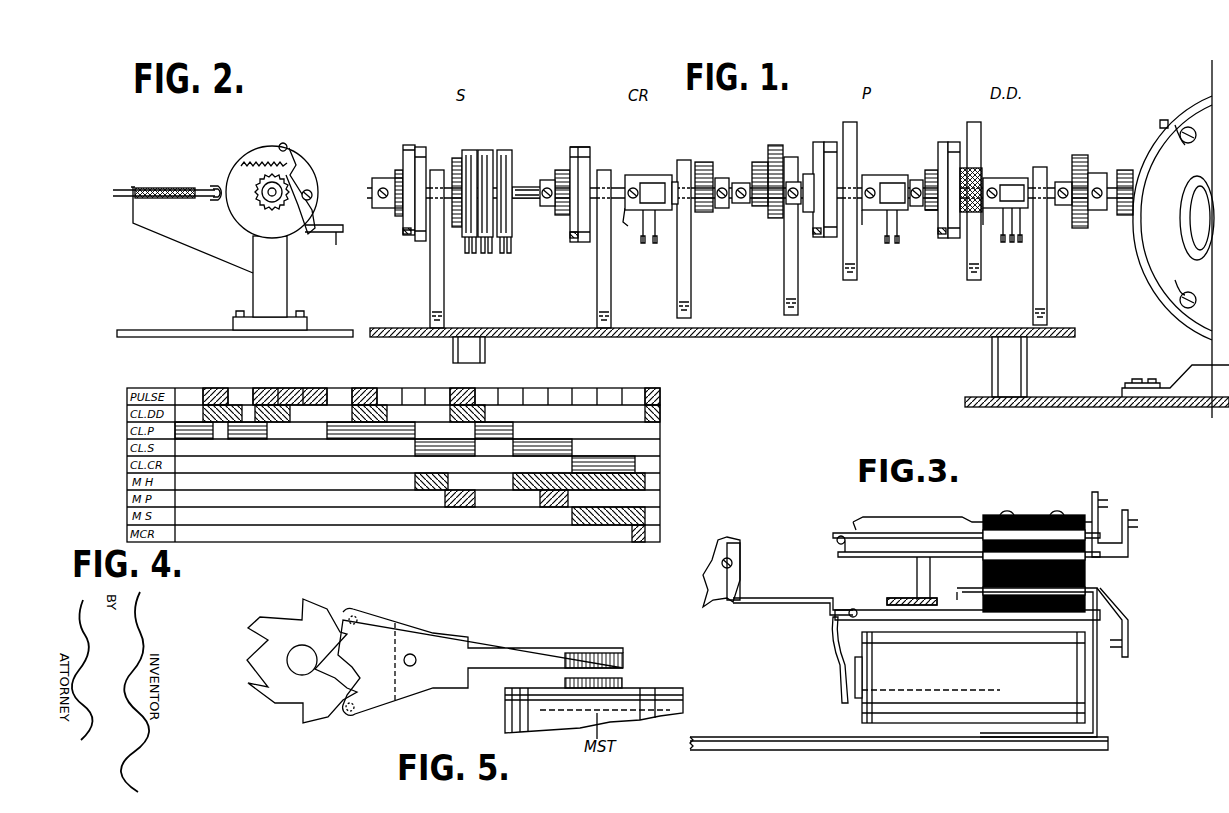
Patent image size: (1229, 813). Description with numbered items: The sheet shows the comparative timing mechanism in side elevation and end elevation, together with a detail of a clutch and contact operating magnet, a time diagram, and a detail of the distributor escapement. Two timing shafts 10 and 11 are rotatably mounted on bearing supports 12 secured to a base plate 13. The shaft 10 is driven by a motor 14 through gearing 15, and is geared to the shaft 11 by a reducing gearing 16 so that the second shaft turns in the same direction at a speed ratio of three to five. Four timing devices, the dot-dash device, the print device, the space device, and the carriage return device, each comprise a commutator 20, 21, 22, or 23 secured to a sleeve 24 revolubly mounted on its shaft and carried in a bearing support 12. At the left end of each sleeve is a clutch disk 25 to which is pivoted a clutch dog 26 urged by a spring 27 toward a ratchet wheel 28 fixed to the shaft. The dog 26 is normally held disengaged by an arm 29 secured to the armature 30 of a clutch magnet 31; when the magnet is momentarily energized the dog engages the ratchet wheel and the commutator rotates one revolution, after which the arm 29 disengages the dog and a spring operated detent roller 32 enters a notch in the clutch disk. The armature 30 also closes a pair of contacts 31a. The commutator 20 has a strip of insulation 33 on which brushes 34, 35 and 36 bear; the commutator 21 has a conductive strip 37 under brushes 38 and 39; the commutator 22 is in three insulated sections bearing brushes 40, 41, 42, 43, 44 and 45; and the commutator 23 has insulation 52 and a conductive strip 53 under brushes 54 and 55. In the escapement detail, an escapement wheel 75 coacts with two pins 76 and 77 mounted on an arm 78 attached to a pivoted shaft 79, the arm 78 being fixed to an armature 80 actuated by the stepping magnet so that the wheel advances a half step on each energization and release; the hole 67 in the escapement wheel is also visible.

In FIG. 1, the timing shaft 10 is at (985, 178).
In FIG. 1, the timing shaft 11 is at (524, 186).
In FIG. 1, the bearing support 12 is at (430, 290).
In FIG. 2, the bearing support 12 is at (287, 283).
In FIG. 1, the base plate 13 is at (757, 338).
In FIG. 2, the base plate 13 is at (278, 337).
In FIG. 1, the motor 14 is at (1143, 290).
In FIG. 1, the gearing 15 is at (1078, 228).
In FIG. 1, the reducing gearing 16 is at (770, 220).
In FIG. 1, the commutator 20 is at (1008, 178).
In FIG. 1, the commutator 21 is at (890, 175).
In FIG. 1, the commutator 22 is at (510, 134).
In FIG. 1, the commutator 23 is at (662, 183).
In FIG. 1, the sleeve 24 is at (455, 170).
In FIG. 1, the clutch disk 25 is at (421, 147).
In FIG. 2, the clutch disk 25 is at (292, 228).
In FIG. 3, the clutch disk 25 is at (718, 607).
In FIG. 1, the clutch dog 26 is at (572, 224).
In FIG. 2, the clutch dog 26 is at (300, 158).
In FIG. 3, the clutch dog 26 is at (740, 548).
In FIG. 2, the spring 27 is at (265, 150).
In FIG. 1, the ratchet wheel 28 is at (398, 175).
In FIG. 2, the ratchet wheel 28 is at (258, 207).
In FIG. 1, the arm 29 is at (405, 236).
In FIG. 2, the arm 29 is at (336, 245).
In FIG. 3, the arm 29 is at (783, 603).
In FIG. 3, the armature 30 is at (837, 645).
In FIG. 3, the clutch magnet 31 is at (862, 715).
In FIG. 3, the contacts 31a is at (843, 540).
In FIG. 2, the detent roller 32 is at (217, 184).
In FIG. 1, the strip of insulation 33 is at (1022, 185).
In FIG. 1, the brush 34 is at (1003, 243).
In FIG. 1, the brush 35 is at (1012, 243).
In FIG. 1, the brush 36 is at (1021, 243).
In FIG. 1, the conductive strip 37 is at (900, 203).
In FIG. 1, the brush 38 is at (887, 244).
In FIG. 1, the brush 39 is at (897, 244).
In FIG. 1, the brush 40 is at (467, 254).
In FIG. 1, the brush 41 is at (474, 256).
In FIG. 1, the brush 42 is at (483, 254).
In FIG. 1, the brush 43 is at (490, 256).
In FIG. 1, the brush 44 is at (502, 254).
In FIG. 1, the brush 45 is at (511, 256).
In FIG. 1, the insulation 52 is at (648, 175).
In FIG. 1, the conductive strip 53 is at (676, 182).
In FIG. 1, the brush 54 is at (643, 244).
In FIG. 1, the brush 55 is at (656, 244).
In FIG. 5, the pivot hole 67 is at (290, 668).
In FIG. 5, the escapement wheel 75 is at (282, 625).
In FIG. 5, the pin 76 is at (365, 618).
In FIG. 5, the pin 77 is at (362, 712).
In FIG. 5, the arm 78 is at (453, 640).
In FIG. 5, the shaft 79 is at (411, 666).
In FIG. 5, the armature 80 is at (548, 653).